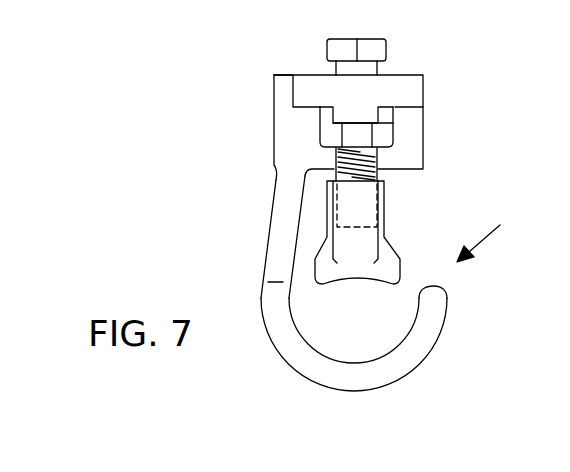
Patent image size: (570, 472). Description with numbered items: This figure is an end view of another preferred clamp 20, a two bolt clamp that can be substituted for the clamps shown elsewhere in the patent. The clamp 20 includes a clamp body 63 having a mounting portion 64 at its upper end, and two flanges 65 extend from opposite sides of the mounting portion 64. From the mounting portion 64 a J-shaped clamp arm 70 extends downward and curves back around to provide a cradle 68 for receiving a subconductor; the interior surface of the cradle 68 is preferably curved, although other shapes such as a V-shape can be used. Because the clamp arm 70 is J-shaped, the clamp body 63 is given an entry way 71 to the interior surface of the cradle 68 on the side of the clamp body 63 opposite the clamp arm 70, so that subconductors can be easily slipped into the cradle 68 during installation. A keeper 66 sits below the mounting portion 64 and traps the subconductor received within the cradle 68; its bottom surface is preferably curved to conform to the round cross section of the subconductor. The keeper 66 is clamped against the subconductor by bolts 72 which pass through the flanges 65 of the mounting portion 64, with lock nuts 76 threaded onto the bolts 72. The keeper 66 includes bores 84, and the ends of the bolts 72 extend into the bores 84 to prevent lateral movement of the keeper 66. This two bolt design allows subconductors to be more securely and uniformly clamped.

The clamp 20 is at (176, 65).
The clamp body 63 is at (286, 148).
The mounting portion 64 is at (355, 113).
The flanges 65 is at (404, 88).
The keeper 66 is at (363, 250).
The cradle 68 is at (360, 380).
The J-shaped clamp arm 70 is at (270, 262).
The entry way 71 is at (494, 238).
The bolts 72 is at (327, 47).
The lock nuts 76 is at (388, 137).
The bores 84 is at (378, 202).